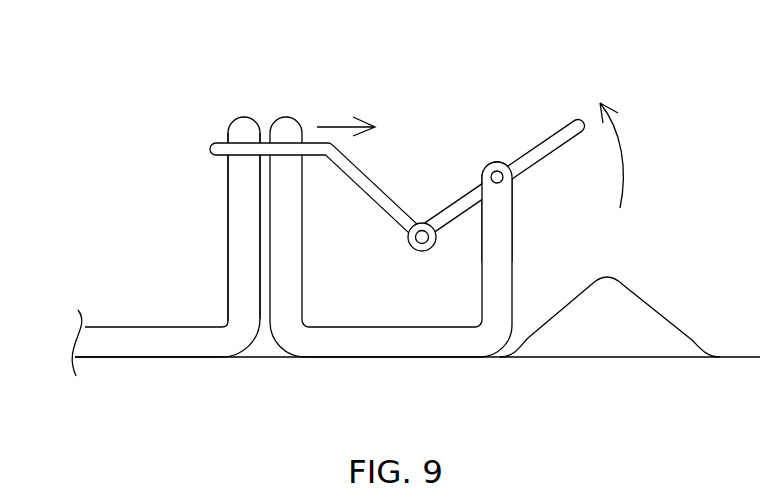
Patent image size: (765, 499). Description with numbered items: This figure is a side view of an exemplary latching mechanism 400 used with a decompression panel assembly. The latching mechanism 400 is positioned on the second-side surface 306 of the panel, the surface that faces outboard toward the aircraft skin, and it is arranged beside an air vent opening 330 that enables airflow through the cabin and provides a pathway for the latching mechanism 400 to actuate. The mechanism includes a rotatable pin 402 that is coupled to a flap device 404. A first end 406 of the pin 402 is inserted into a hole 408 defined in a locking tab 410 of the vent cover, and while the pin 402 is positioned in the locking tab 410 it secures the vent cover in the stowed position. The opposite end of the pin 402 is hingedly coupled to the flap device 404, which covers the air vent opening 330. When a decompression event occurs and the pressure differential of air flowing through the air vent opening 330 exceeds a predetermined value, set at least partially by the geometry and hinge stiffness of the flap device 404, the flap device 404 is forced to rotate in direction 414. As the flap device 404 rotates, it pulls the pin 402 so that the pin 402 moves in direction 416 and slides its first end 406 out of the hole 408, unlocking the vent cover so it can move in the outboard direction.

The second-side surface 306 is at (120, 303).
The air vent opening 330 is at (650, 305).
The latching mechanism 400 is at (395, 186).
The rotatable pin 402 is at (377, 205).
The flap device 404 is at (557, 127).
The first end 406 is at (188, 148).
The hole 408 is at (222, 135).
The locking tab 410 is at (228, 215).
The direction 414 is at (623, 152).
The direction 416 is at (422, 202).